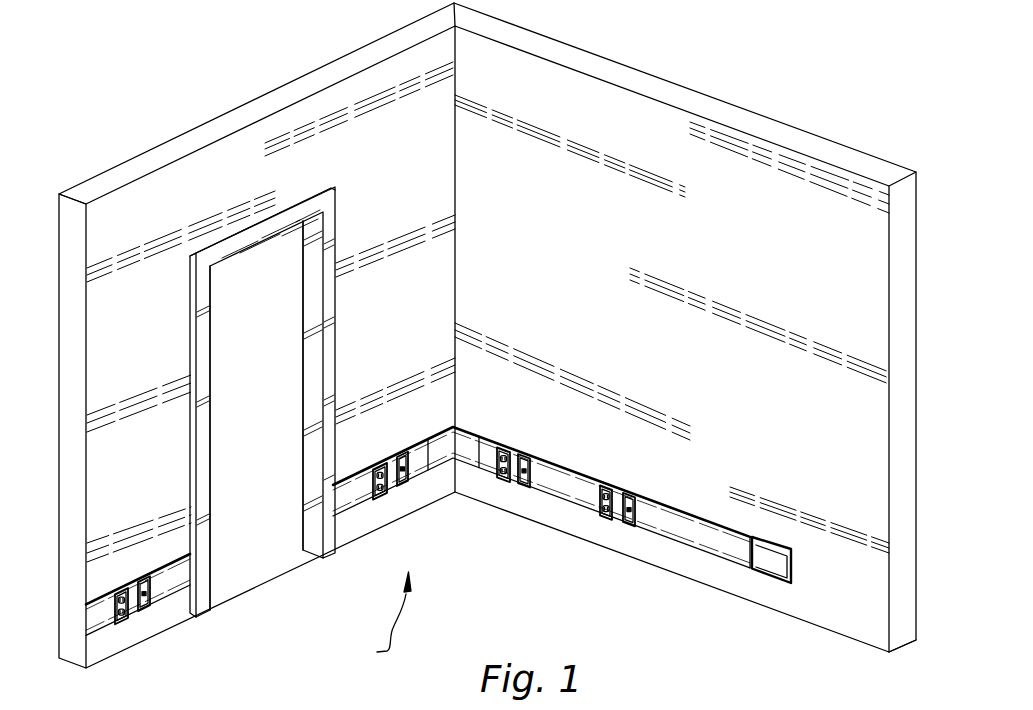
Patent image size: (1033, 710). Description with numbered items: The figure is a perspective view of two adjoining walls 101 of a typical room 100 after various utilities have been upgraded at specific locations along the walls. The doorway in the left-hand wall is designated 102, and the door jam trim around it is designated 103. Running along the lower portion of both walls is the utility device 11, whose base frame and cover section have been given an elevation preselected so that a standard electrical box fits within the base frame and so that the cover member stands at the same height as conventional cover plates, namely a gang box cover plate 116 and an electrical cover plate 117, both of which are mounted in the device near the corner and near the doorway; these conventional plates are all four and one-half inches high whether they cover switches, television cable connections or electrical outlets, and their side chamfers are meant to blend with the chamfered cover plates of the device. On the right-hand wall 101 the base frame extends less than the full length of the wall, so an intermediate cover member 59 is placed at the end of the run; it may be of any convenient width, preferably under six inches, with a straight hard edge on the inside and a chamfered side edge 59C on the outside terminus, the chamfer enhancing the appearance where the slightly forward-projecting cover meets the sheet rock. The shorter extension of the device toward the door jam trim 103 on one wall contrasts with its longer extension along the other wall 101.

The room 100 is at (387, 651).
The wall 101 is at (629, 313).
The doorway 102 is at (305, 361).
The door jam trim 103 is at (334, 340).
The raceway 11 is at (680, 527).
The intermediate cover member 59 is at (770, 562).
The chamfered side edge 59C is at (793, 577).
The gang box cover plate 116 is at (523, 484).
The electrical cover plate 117 is at (500, 478).